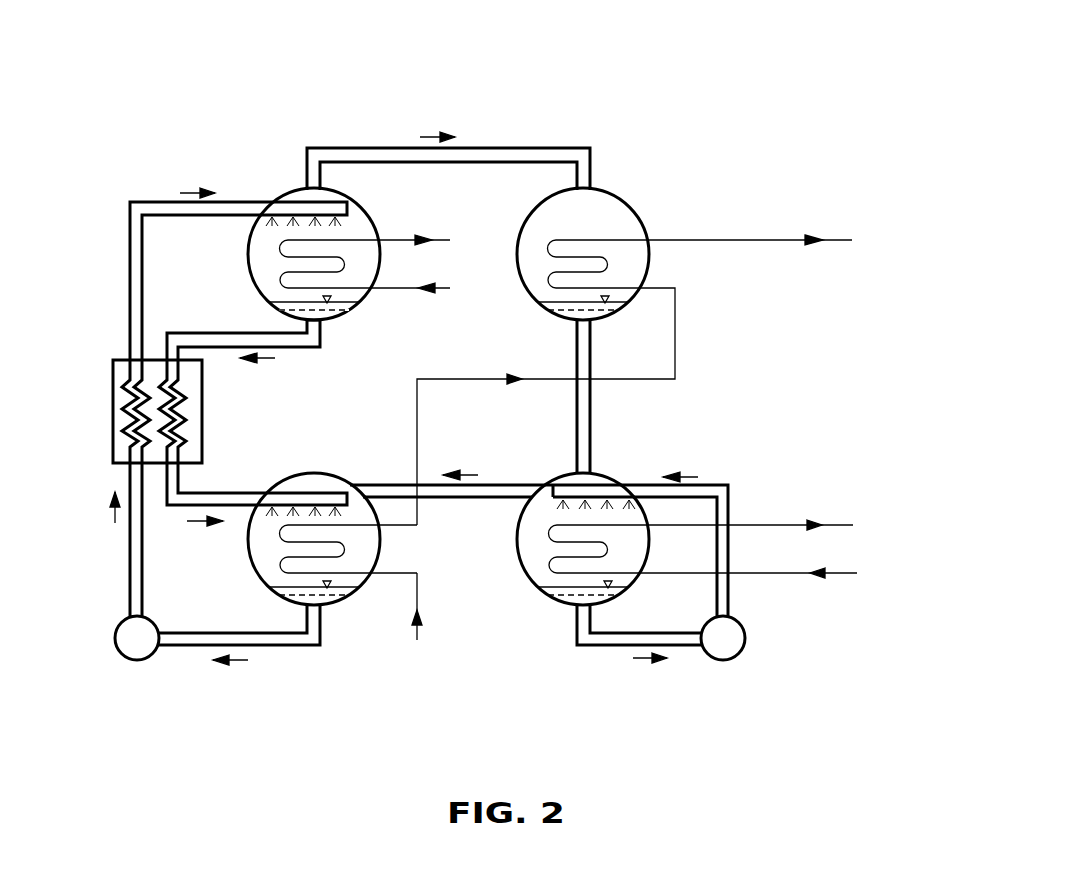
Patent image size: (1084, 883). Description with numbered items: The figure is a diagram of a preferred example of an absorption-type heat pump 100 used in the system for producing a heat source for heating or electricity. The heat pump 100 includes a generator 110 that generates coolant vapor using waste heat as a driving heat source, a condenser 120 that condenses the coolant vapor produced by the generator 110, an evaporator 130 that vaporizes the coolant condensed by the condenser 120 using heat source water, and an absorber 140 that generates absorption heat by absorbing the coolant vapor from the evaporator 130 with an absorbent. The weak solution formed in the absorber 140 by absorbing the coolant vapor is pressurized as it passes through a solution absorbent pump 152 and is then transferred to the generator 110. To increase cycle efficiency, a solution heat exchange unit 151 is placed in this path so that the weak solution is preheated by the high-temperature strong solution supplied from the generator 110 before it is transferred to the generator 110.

The absorption-type heat pump 100 is at (470, 58).
The generator 110 is at (285, 192).
The condenser 120 is at (610, 203).
The evaporator 130 is at (567, 603).
The absorber 140 is at (332, 603).
The solution heat exchange unit 151 is at (202, 408).
The solution absorbent pump 152 is at (137, 661).